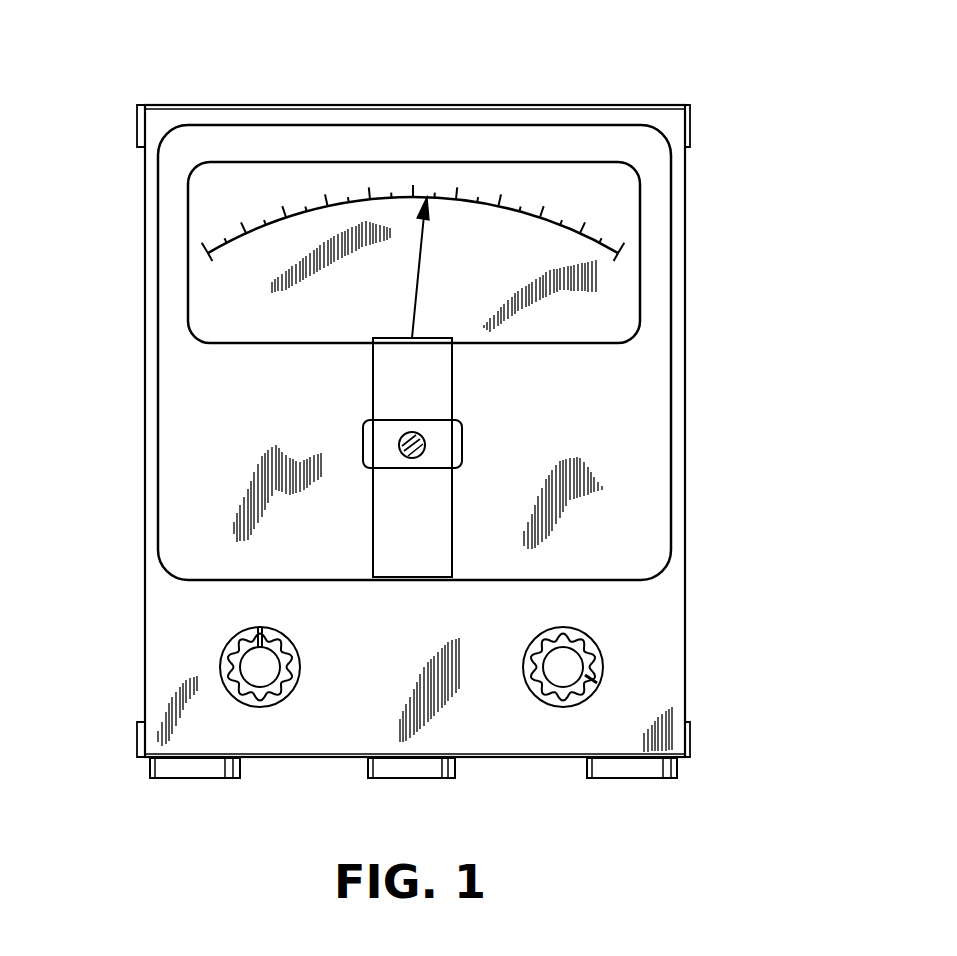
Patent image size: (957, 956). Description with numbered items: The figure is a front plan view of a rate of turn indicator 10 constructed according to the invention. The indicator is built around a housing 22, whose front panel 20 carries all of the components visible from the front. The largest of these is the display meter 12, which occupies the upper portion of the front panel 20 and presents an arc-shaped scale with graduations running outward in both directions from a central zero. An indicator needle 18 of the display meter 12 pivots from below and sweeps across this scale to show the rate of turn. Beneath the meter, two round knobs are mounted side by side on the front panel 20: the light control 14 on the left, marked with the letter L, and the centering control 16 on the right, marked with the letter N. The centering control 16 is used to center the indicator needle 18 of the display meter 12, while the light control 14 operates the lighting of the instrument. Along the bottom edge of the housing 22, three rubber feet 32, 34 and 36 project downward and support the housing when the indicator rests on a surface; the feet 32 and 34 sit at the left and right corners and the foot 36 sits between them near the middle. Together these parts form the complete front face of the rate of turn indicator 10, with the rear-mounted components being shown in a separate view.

The rate of turn indicator 10 is at (847, 85).
The display meter 12 is at (627, 208).
The light control 14 is at (227, 657).
The centering control 16 is at (600, 660).
The indicator needle 18 is at (418, 268).
The front panel 20 is at (642, 605).
The housing 22 is at (685, 355).
The rubber foot 32 is at (173, 772).
The rubber foot 34 is at (627, 770).
The rubber foot 36 is at (403, 770).